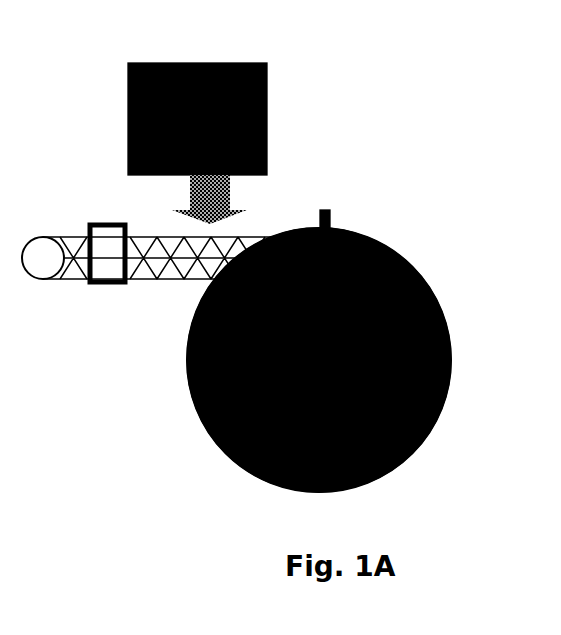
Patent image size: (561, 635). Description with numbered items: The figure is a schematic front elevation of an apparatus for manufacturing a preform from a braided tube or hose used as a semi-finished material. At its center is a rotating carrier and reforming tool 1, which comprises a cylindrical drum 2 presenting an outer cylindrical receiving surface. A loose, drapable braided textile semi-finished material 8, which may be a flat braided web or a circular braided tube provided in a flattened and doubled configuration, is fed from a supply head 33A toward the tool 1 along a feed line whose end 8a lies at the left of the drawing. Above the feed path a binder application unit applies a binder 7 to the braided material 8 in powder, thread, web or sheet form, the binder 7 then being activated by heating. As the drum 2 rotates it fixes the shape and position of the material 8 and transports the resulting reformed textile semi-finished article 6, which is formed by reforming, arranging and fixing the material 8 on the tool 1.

The rotating carrier and reforming tool 1 is at (167, 377).
The cylindrical drum 2 is at (223, 448).
The textile semi-finished article 6 is at (397, 253).
The binder 7 is at (267, 78).
The textile semi-finished material 8 is at (297, 232).
The tube end 8a is at (38, 283).
The supply head 33A is at (113, 290).